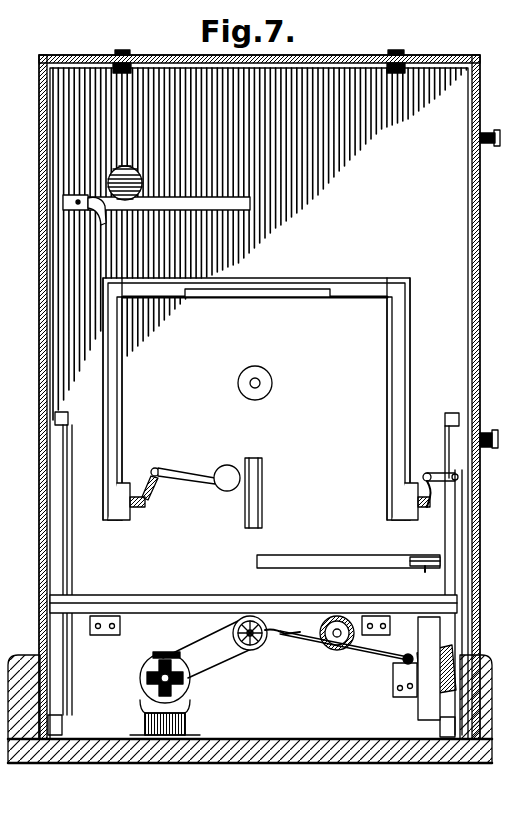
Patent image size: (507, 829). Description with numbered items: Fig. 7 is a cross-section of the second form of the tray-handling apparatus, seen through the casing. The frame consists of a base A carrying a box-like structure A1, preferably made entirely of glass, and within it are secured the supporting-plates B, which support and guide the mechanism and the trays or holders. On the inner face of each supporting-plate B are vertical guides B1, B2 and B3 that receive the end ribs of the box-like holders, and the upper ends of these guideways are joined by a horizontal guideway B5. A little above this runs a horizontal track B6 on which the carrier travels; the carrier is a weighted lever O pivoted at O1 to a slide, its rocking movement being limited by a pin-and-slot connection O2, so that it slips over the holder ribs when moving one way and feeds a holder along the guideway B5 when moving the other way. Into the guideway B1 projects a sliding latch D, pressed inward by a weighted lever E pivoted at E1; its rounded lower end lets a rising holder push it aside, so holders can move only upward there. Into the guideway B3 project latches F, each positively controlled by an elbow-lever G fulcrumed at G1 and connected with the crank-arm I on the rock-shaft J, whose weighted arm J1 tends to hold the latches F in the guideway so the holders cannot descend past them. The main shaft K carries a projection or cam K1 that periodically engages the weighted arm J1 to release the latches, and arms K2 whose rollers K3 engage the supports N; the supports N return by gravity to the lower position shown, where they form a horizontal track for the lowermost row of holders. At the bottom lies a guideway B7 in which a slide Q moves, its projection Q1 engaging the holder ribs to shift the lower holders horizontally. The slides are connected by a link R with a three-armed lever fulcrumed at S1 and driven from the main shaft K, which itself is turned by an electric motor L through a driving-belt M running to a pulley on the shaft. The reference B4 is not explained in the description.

The base A is at (255, 763).
The box-like structure A1 is at (23, 482).
The supporting-plates B is at (445, 586).
The vertical guide B1 is at (112, 434).
The vertical guide B2 is at (265, 490).
The vertical guide B3 is at (400, 371).
The guide strip B4 is at (67, 579).
The horizontal guideway B5 is at (275, 290).
The horizontal track B6 is at (240, 203).
The guideway B7 is at (358, 556).
The sliding latch D is at (112, 500).
The weighted lever E is at (203, 472).
The pivot of weighted lever E1 is at (157, 470).
The latch F is at (400, 522).
The elbow-lever G is at (432, 470).
The fulcrum of elbow-lever G1 is at (432, 510).
The crank-arm I is at (448, 672).
The rock-shaft J is at (382, 656).
The weighted arm J1 is at (418, 688).
The main shaft K is at (263, 641).
The projection or cam K1 is at (238, 642).
The arm K2 is at (298, 626).
The roller K3 is at (342, 617).
The electric motor L is at (180, 725).
The driving-belt M is at (217, 665).
The support N is at (186, 579).
The weighted lever O is at (140, 200).
The pivot of carrier lever O1 is at (77, 208).
The pin-and-slot connection O2 is at (90, 196).
The slide Q is at (426, 566).
The projection Q1 is at (410, 563).
The link R is at (457, 551).
The fulcrum of three-armed lever S1 is at (262, 383).